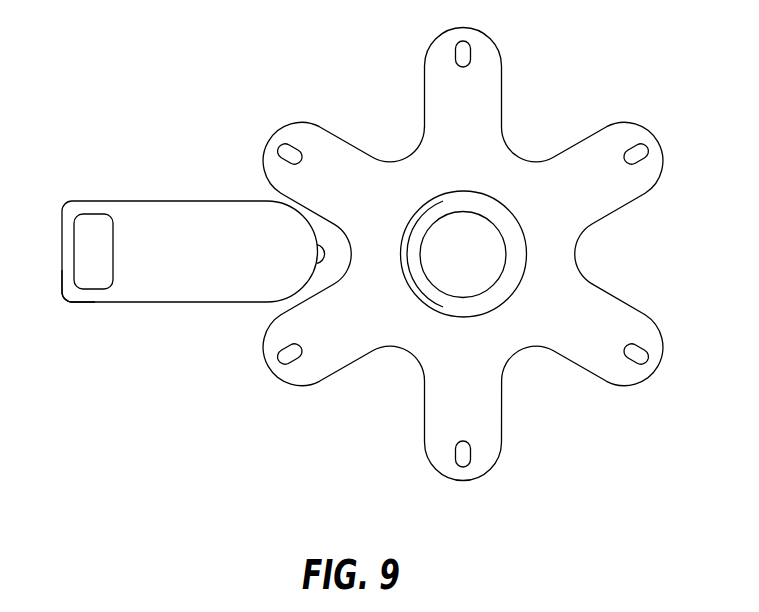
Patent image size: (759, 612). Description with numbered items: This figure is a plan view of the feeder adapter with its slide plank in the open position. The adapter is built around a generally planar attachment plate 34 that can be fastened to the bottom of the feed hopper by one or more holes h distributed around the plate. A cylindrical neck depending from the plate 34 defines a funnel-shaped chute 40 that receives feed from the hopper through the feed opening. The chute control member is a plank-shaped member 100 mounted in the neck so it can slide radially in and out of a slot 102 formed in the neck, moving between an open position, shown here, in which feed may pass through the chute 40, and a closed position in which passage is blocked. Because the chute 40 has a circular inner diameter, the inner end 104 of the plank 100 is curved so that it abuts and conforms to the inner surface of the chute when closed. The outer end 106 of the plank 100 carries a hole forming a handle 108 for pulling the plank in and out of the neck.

The attachment plate 34 is at (615, 140).
The holes h is at (468, 50).
The chute 40 is at (481, 270).
The slot 102 is at (406, 273).
The plank-shaped member 100 is at (208, 303).
The inner end 104 is at (316, 265).
The outer end 106 is at (78, 293).
The handle 108 is at (97, 228).